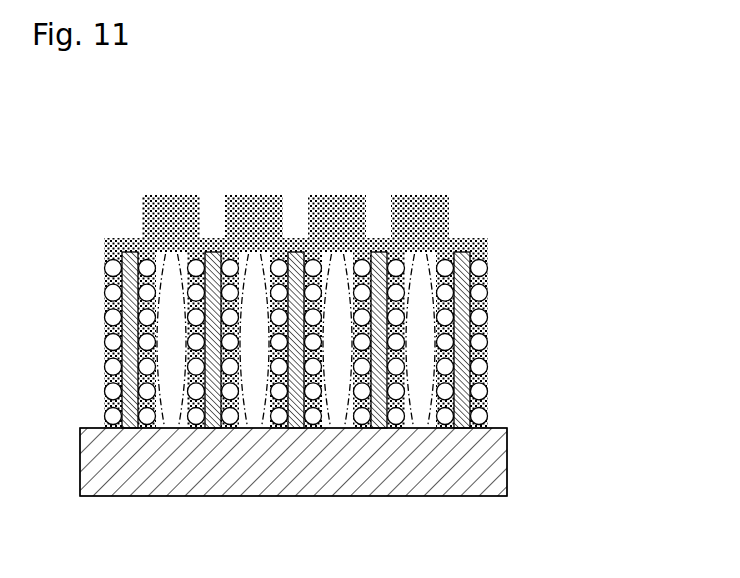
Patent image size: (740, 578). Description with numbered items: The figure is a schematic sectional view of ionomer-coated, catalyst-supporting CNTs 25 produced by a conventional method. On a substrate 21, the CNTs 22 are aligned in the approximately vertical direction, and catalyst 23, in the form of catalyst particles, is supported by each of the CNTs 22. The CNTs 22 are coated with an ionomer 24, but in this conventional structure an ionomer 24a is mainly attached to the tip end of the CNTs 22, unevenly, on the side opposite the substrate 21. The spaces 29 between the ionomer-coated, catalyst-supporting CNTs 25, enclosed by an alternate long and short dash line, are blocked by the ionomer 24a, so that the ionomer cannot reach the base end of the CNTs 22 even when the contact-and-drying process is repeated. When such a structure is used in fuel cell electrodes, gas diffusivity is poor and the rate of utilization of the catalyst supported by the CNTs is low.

The substrate 21 is at (500, 462).
The CNTs 22 is at (472, 387).
The catalyst 23 is at (343, 342).
The ionomer 24 is at (480, 350).
The ionomer 24a is at (243, 207).
The ionomer-coated, catalyst-supporting CNTs 25 is at (377, 275).
The spaces 29 is at (408, 428).